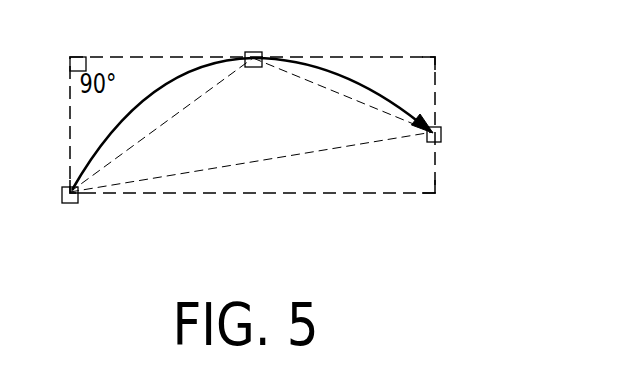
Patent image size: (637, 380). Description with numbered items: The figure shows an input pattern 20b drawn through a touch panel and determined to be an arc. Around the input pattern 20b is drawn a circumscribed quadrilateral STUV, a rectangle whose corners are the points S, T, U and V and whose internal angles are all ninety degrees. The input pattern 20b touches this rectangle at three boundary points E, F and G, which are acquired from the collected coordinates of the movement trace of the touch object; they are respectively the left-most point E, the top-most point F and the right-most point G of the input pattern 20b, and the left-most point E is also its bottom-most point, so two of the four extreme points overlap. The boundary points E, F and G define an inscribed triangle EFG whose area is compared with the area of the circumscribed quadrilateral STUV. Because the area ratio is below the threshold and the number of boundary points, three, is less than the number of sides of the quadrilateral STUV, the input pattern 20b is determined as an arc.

The input pattern 20b is at (398, 103).
The corner point of circumscribed quadrilateral STUV S is at (70, 55).
The corner point of circumscribed quadrilateral STUV T is at (438, 54).
The corner point of circumscribed quadrilateral STUV U is at (439, 205).
The corner point of circumscribed quadrilateral STUV V is at (68, 205).
The boundary point E is at (59, 188).
The boundary point F is at (253, 43).
The boundary point G is at (445, 135).